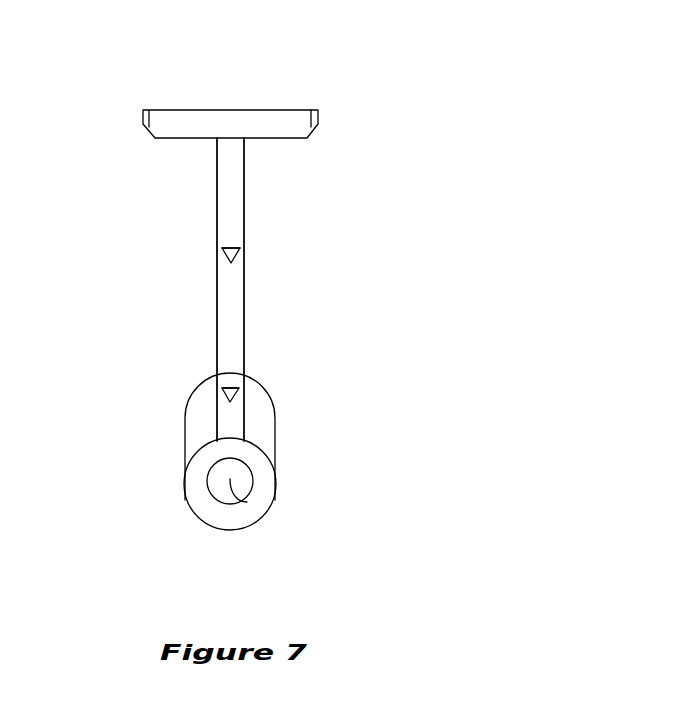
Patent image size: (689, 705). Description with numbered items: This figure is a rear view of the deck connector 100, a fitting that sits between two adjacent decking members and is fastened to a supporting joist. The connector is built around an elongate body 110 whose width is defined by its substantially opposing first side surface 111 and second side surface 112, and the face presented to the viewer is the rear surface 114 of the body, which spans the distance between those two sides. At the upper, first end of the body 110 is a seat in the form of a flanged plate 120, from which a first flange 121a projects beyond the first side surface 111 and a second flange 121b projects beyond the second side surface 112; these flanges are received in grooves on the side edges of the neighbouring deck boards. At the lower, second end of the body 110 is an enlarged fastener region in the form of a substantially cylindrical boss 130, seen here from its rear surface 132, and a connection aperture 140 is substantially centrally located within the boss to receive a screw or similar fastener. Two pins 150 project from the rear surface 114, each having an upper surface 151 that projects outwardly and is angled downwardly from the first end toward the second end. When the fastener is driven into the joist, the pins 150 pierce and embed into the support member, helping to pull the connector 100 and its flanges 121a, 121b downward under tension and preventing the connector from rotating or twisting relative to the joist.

The deck connector 100 is at (295, 77).
The body 110 is at (197, 243).
The first side surface 111 is at (244, 180).
The second side surface 112 is at (217, 180).
The rear surface 114 is at (231, 298).
The flanged plate 120 is at (160, 108).
The first flange 121a is at (320, 115).
The second flange 121b is at (142, 115).
The boss 130 is at (170, 447).
The rear surface of the boss 132 is at (203, 501).
The connection aperture 140 is at (247, 502).
The pin 150 is at (240, 252).
The upper surface 151 is at (224, 249).